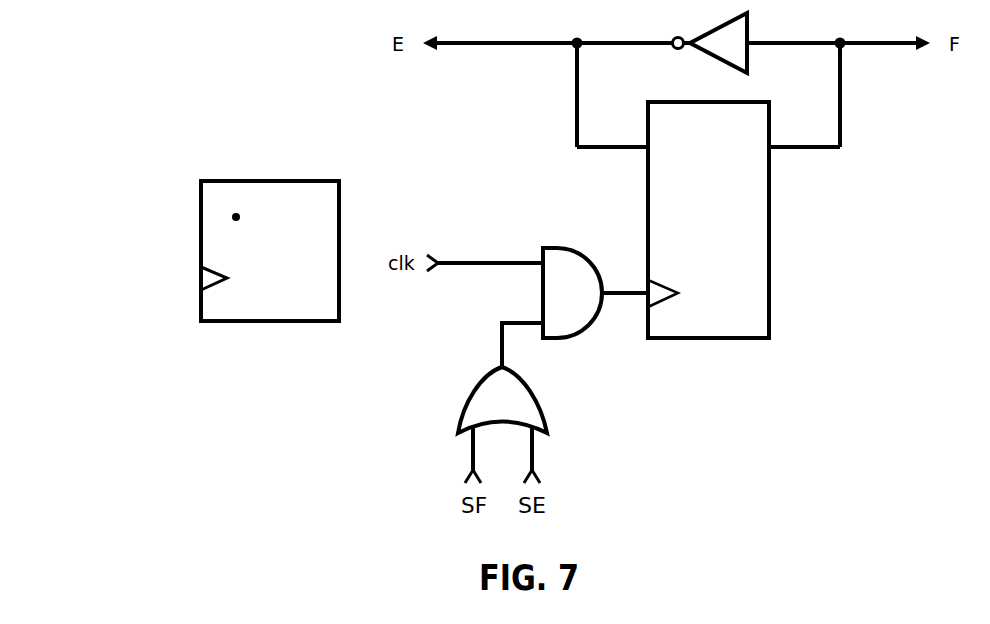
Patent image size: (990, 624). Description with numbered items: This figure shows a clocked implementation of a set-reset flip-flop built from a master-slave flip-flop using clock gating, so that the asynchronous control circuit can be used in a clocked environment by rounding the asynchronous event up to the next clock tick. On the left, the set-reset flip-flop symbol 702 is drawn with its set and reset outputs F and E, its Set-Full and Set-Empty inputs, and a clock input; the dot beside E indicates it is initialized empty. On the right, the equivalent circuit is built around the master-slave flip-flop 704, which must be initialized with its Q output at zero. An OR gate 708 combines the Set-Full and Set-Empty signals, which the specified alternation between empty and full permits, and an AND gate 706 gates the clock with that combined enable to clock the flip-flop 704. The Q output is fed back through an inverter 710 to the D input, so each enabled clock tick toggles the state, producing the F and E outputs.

The SRFF (scan/set-reset flip-flop symbol) 702 is at (250, 251).
The MSFF (master-slave flip-flop) 704 is at (708, 220).
The AND gate 706 is at (572, 293).
The OR gate 708 is at (502, 400).
The inverter 710 is at (710, 43).